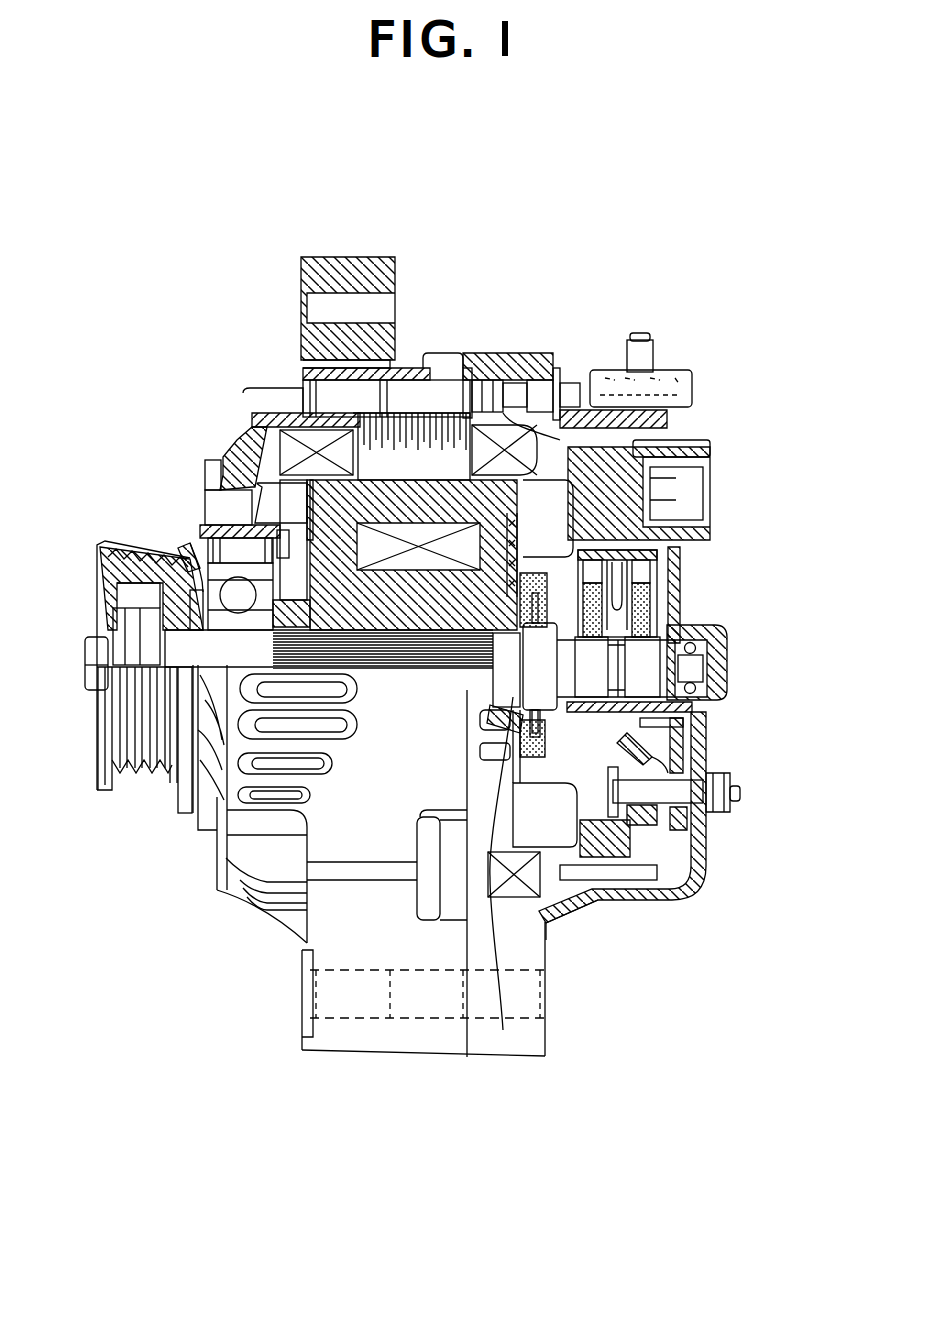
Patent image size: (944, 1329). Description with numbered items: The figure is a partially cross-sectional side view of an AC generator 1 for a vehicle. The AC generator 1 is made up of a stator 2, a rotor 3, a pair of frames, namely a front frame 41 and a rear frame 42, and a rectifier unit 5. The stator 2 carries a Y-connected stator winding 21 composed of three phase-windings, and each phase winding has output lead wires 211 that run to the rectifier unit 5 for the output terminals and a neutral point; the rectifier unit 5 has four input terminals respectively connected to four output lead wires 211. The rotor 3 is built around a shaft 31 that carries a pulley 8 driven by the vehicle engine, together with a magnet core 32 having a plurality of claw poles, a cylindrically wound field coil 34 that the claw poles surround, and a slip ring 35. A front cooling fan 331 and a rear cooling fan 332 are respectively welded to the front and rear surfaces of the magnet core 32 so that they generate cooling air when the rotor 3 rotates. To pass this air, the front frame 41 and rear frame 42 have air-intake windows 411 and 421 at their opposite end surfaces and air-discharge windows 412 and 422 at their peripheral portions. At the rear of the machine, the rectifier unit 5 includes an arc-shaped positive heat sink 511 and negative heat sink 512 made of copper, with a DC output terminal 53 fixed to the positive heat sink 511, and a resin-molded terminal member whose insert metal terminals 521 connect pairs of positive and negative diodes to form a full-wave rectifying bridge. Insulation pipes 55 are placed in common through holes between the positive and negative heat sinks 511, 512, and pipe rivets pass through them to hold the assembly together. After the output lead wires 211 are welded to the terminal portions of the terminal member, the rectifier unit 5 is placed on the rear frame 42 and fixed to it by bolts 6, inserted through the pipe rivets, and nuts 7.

The AC generator 1 is at (205, 272).
The stator 2 is at (556, 449).
The stator winding 21 is at (500, 440).
The output lead wires 211 is at (667, 903).
The rotor 3 is at (270, 470).
The shaft 31 is at (217, 848).
The magnet core 32 is at (302, 373).
The front cooling fan 331 is at (263, 495).
The rear cooling fan 332 is at (540, 823).
The field coil 34 is at (388, 495).
The slip ring 35 is at (630, 623).
The front frame 41 is at (225, 442).
The air-intake window 411 is at (212, 517).
The air-discharge window 412 is at (303, 763).
The rear frame 42 is at (680, 567).
The air-intake window 421 is at (700, 737).
The air-discharge window 422 is at (492, 755).
The rectifier unit 5 is at (682, 840).
The positive heat sink 511 is at (715, 770).
The negative heat sink 512 is at (703, 712).
The insert metal terminals 521 is at (600, 870).
The DC output terminal 53 is at (651, 349).
The insulation pipes 55 is at (655, 872).
The bolts 6 is at (692, 803).
The nuts 7 is at (726, 806).
The pulley 8 is at (135, 543).